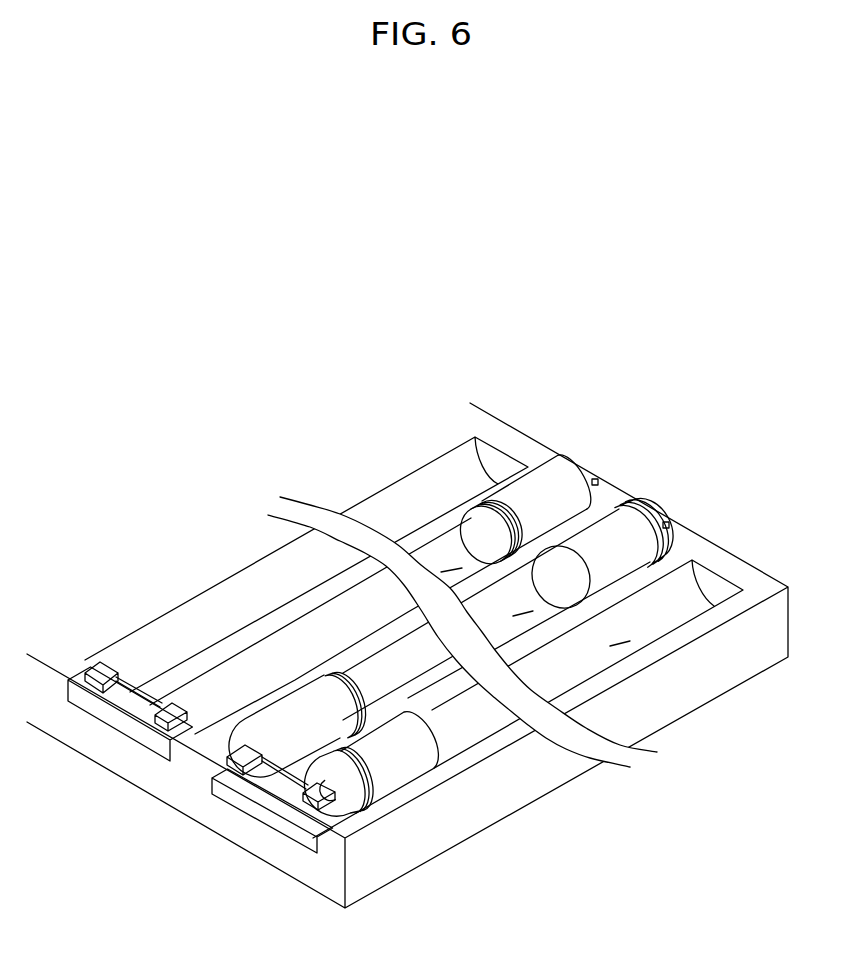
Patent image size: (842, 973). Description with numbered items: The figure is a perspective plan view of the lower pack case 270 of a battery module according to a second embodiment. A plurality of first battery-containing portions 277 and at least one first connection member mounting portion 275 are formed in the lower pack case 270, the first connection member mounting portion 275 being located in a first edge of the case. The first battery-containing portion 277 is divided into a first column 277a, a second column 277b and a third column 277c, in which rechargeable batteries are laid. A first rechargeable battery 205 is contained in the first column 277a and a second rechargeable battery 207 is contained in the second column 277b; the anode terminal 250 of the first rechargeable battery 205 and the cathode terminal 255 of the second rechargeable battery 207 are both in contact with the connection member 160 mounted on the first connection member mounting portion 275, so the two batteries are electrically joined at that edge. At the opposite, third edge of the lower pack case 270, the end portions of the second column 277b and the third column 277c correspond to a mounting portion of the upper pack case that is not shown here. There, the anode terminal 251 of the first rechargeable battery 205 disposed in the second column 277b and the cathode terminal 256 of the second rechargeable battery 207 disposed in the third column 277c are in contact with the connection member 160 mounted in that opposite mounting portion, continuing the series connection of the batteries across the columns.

The connection member 160 is at (272, 792).
The first rechargeable battery 205 is at (620, 527).
The second rechargeable battery 207 is at (543, 492).
The anode terminal 250 is at (307, 800).
The anode terminal 251 is at (665, 522).
The cathode terminal 255 is at (224, 772).
The cathode terminal 256 is at (594, 479).
The lower pack case 270 is at (377, 877).
The first connection member mounting portion 275 is at (214, 778).
The first battery-containing portion 277 is at (413, 368).
The first column 277a is at (620, 642).
The second column 277b is at (521, 612).
The third column 277c is at (453, 568).